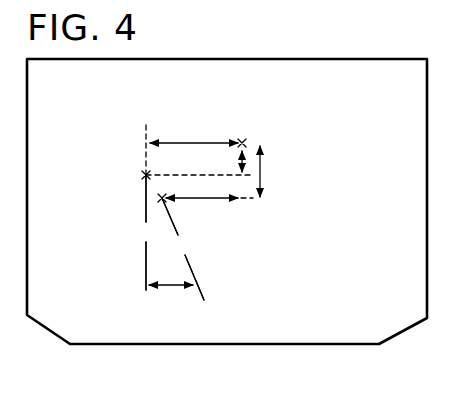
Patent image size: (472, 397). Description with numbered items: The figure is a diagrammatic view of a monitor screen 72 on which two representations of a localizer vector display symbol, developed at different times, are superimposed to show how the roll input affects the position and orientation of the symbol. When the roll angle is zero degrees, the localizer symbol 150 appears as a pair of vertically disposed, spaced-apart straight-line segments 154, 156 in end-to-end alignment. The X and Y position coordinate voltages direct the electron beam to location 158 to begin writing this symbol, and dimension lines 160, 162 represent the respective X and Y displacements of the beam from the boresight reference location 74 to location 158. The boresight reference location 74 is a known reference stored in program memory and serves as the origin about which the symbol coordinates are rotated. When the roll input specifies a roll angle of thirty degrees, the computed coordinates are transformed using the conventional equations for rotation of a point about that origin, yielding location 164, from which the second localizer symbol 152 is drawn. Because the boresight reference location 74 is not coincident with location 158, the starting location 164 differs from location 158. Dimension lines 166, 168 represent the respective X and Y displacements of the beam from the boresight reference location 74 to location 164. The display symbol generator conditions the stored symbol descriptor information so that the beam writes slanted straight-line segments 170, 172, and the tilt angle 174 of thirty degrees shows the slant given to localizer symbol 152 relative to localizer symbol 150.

The monitor screen 72 is at (53, 332).
The boresight reference location 74 is at (242, 143).
The localizer symbol 150 is at (124, 232).
The localizer symbol 152 is at (216, 262).
The straight-line segment 154 is at (146, 210).
The straight-line segment 156 is at (146, 275).
The location 158 is at (145, 175).
The dimension line 160 is at (224, 141).
The dimension line 162 is at (241, 158).
The location 164 is at (163, 198).
The dimension line 166 is at (212, 199).
The dimension line 168 is at (261, 170).
The straight-line segment 170 is at (176, 231).
The straight-line segment 172 is at (200, 290).
The tilt angle 174 is at (170, 286).